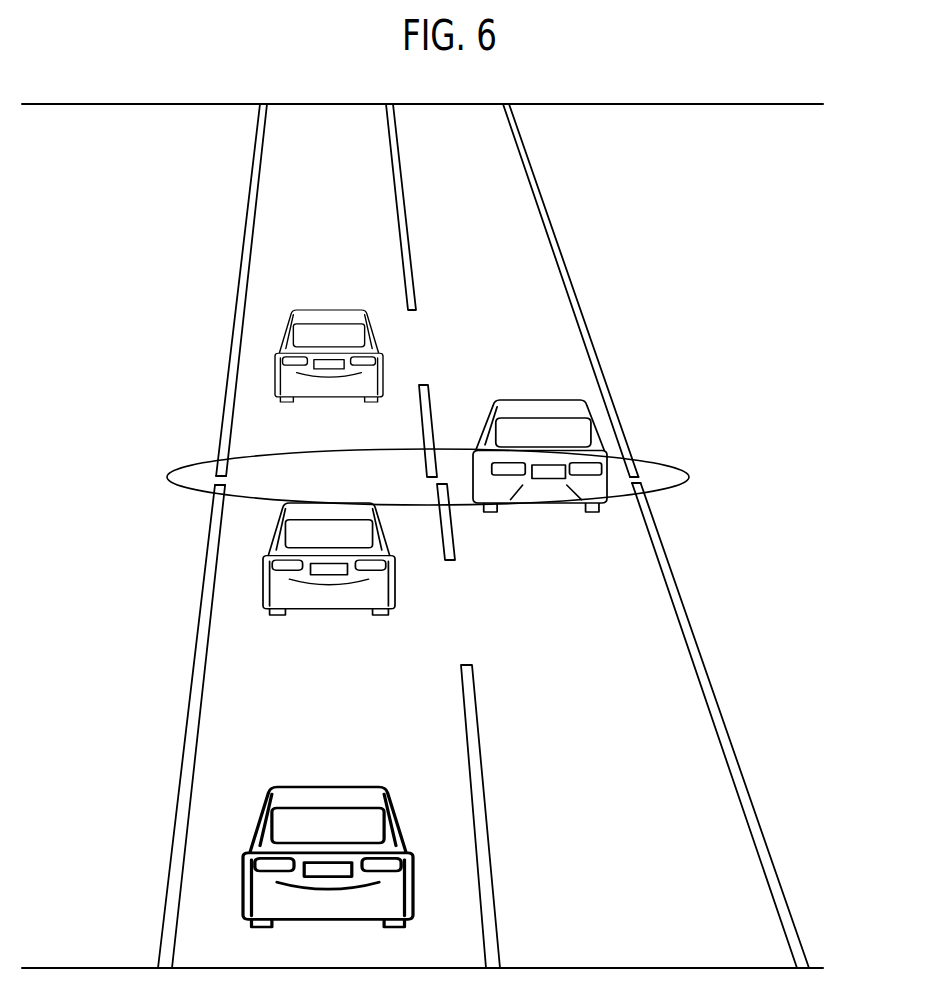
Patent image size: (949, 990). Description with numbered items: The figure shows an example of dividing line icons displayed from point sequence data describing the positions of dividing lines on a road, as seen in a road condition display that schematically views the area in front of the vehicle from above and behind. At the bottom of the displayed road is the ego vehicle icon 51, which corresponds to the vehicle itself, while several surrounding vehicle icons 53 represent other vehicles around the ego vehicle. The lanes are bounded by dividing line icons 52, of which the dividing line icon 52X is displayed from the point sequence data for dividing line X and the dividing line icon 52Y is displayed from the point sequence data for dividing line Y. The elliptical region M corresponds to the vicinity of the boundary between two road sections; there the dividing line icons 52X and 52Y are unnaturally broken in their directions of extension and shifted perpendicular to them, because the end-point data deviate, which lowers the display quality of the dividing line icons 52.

The ego vehicle icon 51 is at (252, 856).
The dividing line icons 52 is at (431, 536).
The dividing line icon 52X is at (238, 278).
The dividing line icon 52Y is at (482, 760).
The surrounding vehicle icons 53 is at (275, 353).
The region M is at (187, 466).